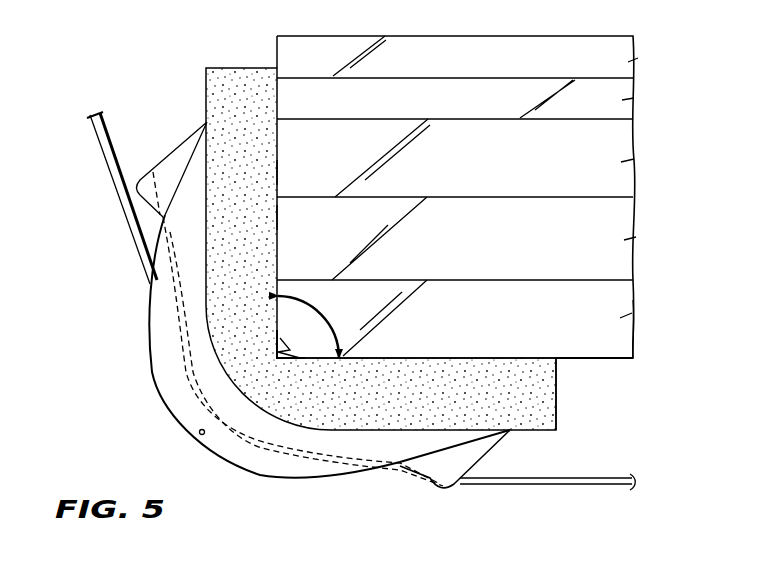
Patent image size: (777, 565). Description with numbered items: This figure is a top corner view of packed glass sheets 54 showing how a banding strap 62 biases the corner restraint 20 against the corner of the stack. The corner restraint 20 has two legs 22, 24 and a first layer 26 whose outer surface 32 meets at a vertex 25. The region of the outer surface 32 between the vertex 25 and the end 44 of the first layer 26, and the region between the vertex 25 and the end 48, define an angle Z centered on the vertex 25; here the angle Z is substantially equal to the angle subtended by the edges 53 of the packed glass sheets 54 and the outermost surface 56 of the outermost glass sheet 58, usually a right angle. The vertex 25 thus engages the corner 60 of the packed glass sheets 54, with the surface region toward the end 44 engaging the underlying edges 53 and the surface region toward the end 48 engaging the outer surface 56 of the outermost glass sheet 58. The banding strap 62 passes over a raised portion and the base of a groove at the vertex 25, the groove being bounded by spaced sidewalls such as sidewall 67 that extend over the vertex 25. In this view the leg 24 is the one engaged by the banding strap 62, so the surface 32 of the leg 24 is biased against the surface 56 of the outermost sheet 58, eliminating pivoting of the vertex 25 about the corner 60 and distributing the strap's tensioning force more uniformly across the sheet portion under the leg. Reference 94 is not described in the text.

The corner restraint 20 is at (146, 76).
The leg 22 is at (122, 322).
The leg 24 is at (337, 490).
The vertex 25 is at (287, 338).
The first layer 26 is at (280, 172).
The outer surface 32 is at (278, 218).
The end 44 is at (247, 68).
The end 48 is at (558, 393).
The edges 53 is at (277, 52).
The packed glass sheets 54 is at (632, 60).
The outermost surface 56 is at (612, 360).
The outermost glass sheet 58 is at (640, 338).
The corner 60 is at (297, 357).
The banding strap 62 is at (127, 203).
The sidewall 67 is at (365, 468).
The stitch line 94 is at (199, 433).
The angle Z is at (333, 313).